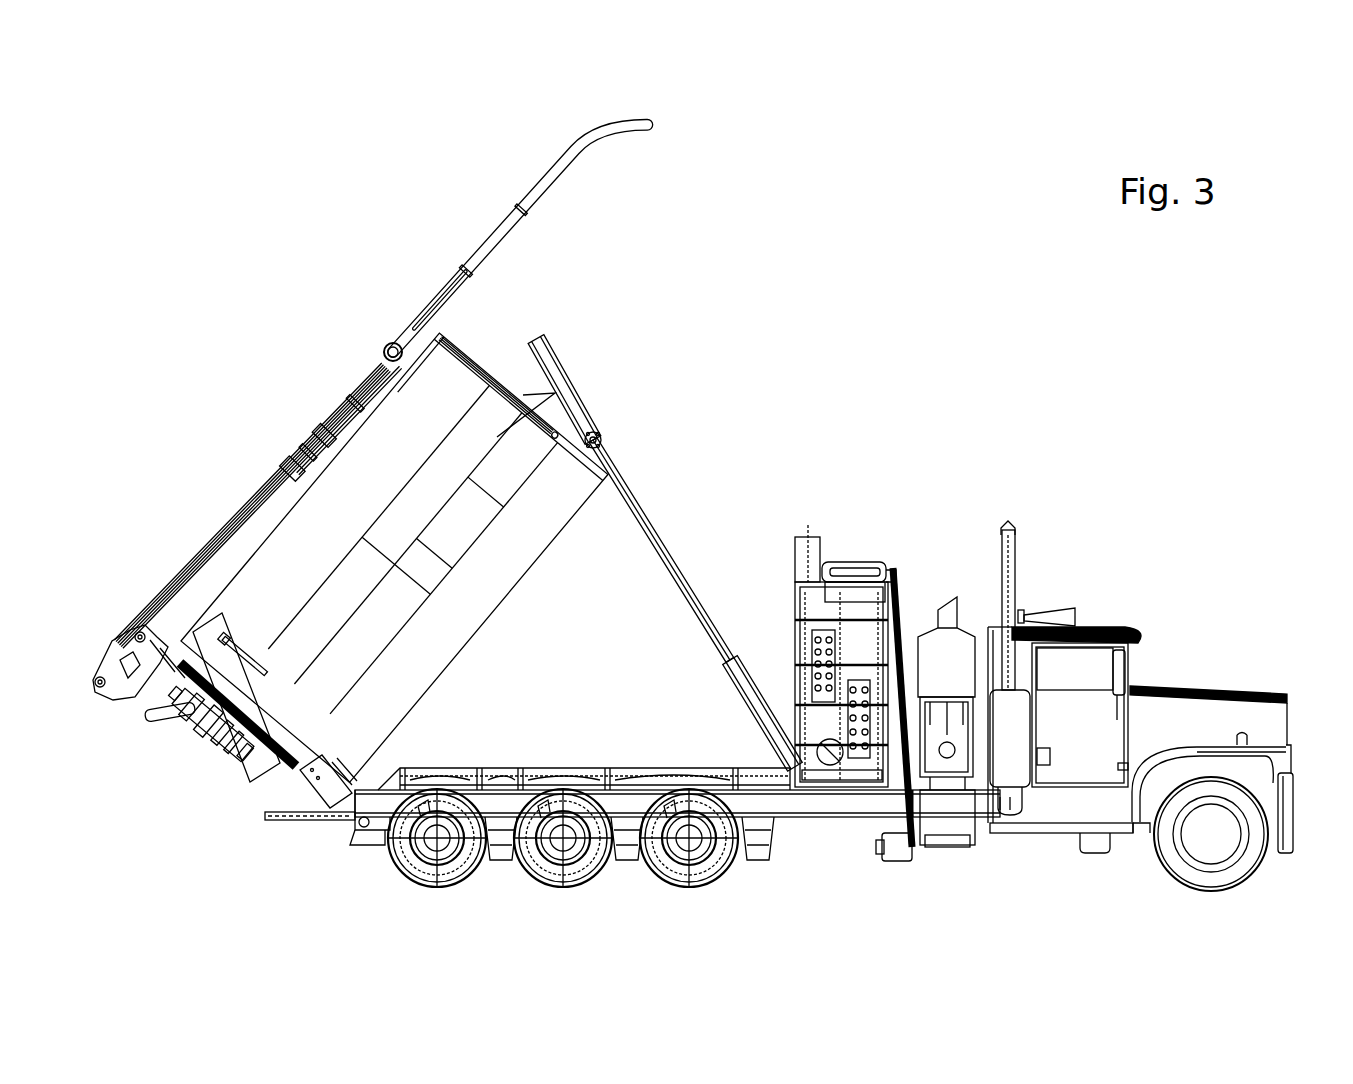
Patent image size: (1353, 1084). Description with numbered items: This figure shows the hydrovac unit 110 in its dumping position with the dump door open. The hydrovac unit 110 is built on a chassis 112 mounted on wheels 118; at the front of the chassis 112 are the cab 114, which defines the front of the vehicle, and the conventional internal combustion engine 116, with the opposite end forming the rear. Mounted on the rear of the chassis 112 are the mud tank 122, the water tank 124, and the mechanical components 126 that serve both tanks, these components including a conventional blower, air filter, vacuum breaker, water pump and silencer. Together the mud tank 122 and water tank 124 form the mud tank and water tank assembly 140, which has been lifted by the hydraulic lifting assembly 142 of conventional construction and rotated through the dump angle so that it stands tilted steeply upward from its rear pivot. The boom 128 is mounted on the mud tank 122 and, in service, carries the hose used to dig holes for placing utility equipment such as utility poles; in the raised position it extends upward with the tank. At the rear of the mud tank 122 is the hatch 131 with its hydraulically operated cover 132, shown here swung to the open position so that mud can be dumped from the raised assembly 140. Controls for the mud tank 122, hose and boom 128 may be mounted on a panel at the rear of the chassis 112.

The hydrovac unit 110 is at (947, 372).
The chassis 112 is at (818, 805).
The cab 114 is at (1094, 627).
The internal combustion engine 116 is at (1185, 712).
The wheels 118 is at (586, 880).
The mud tank 122 is at (270, 658).
The water tank 124 is at (428, 669).
The mechanical components 126 is at (792, 511).
The boom 128 is at (253, 513).
The hatch 131 is at (258, 744).
The hydraulically operated cover 132 is at (178, 754).
The mud tank and water tank assembly 140 is at (478, 284).
The hydraulic lifting assembly 142 is at (672, 555).